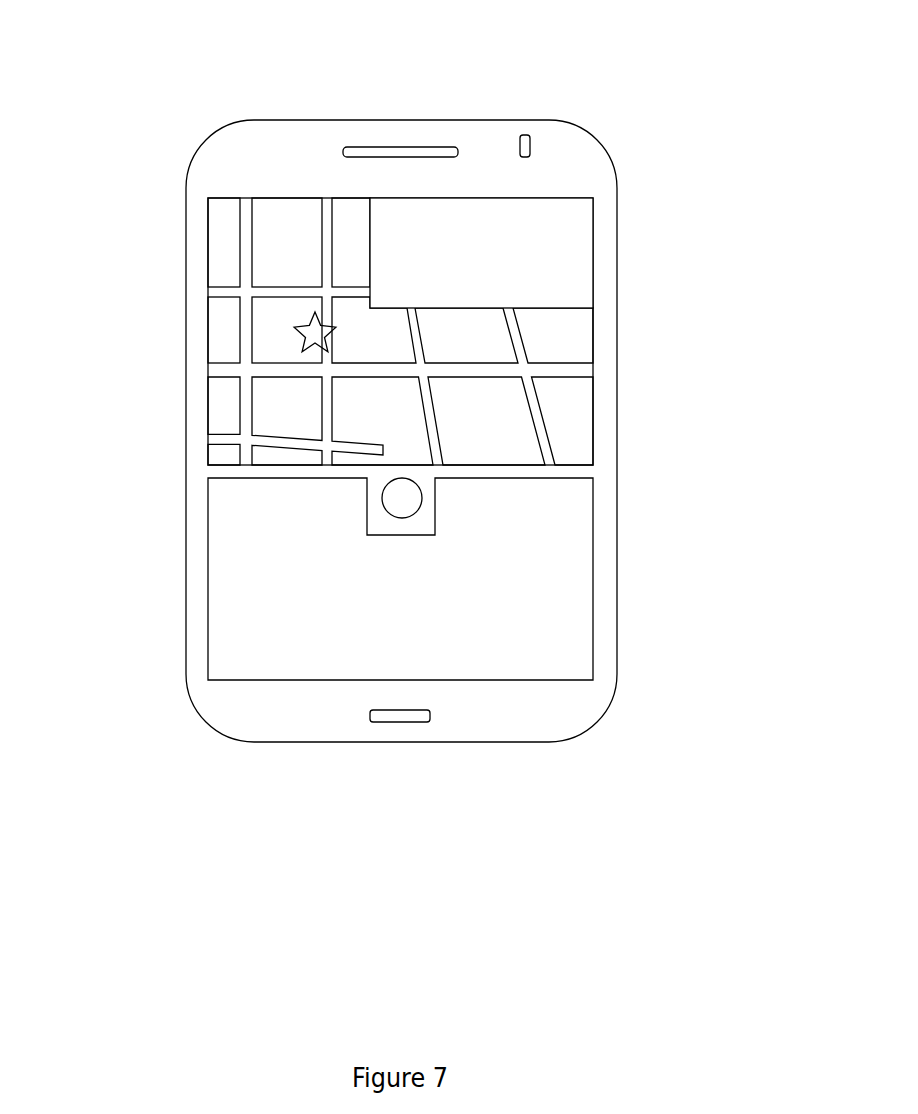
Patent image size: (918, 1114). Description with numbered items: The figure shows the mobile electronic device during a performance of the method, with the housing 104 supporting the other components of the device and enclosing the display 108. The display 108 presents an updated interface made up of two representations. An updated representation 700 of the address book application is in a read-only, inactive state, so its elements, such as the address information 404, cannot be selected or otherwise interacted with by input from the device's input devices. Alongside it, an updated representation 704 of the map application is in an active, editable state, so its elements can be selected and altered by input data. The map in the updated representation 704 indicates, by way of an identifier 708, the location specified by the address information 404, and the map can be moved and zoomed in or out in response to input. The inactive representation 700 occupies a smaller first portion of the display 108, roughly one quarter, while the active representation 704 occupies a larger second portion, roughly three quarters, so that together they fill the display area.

The housing 104 is at (402, 119).
The display 108 is at (305, 198).
The updated representation of address book application 700 is at (594, 253).
The updated representation of map application 704 is at (240, 313).
The identifier 708 is at (296, 328).
The address information 404 is at (535, 282).